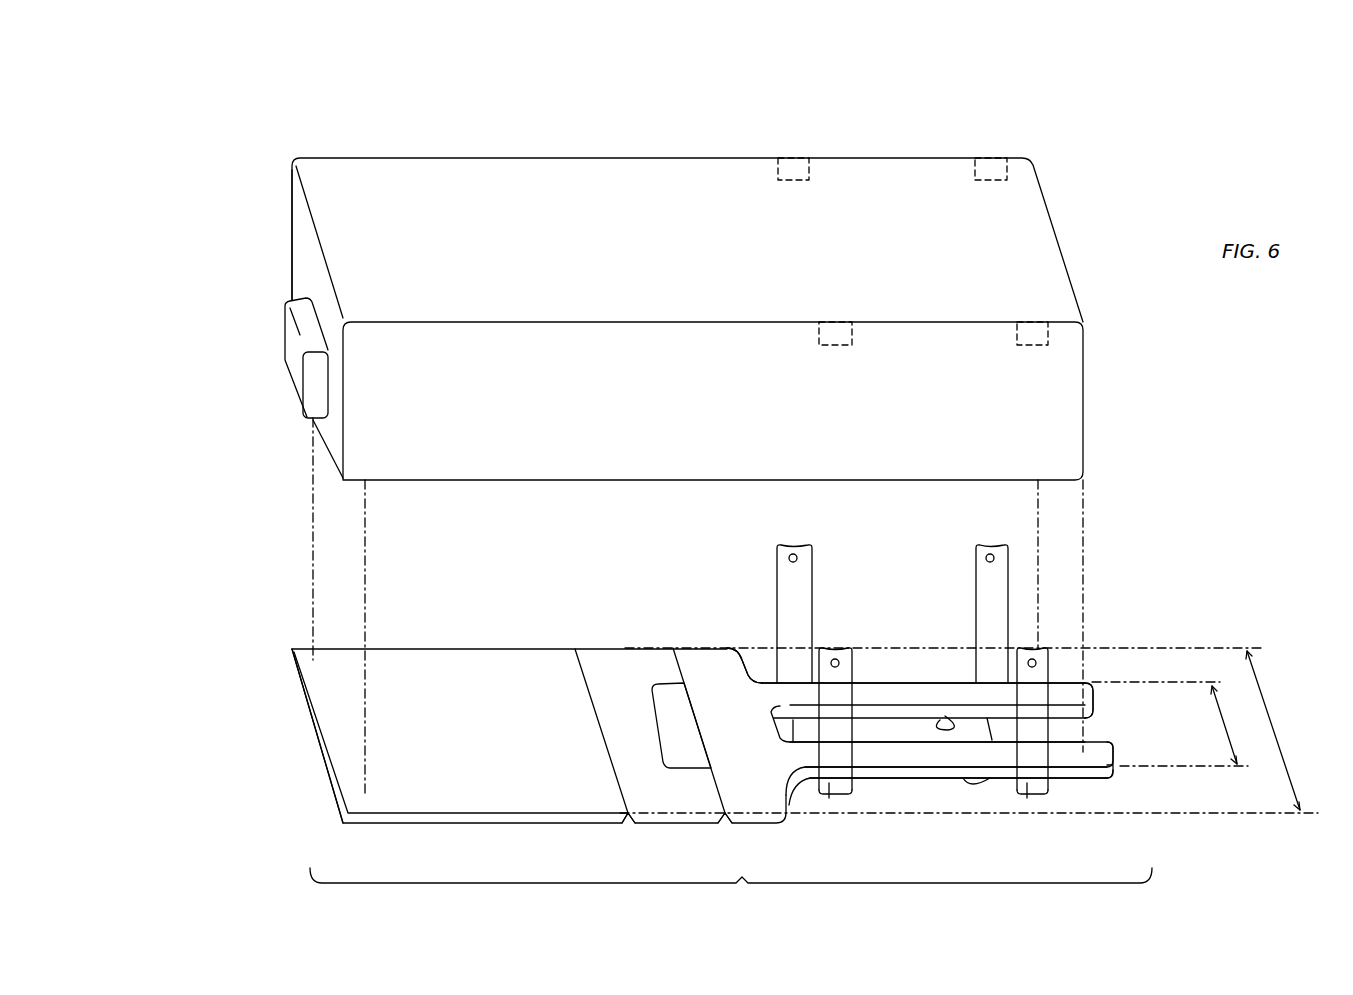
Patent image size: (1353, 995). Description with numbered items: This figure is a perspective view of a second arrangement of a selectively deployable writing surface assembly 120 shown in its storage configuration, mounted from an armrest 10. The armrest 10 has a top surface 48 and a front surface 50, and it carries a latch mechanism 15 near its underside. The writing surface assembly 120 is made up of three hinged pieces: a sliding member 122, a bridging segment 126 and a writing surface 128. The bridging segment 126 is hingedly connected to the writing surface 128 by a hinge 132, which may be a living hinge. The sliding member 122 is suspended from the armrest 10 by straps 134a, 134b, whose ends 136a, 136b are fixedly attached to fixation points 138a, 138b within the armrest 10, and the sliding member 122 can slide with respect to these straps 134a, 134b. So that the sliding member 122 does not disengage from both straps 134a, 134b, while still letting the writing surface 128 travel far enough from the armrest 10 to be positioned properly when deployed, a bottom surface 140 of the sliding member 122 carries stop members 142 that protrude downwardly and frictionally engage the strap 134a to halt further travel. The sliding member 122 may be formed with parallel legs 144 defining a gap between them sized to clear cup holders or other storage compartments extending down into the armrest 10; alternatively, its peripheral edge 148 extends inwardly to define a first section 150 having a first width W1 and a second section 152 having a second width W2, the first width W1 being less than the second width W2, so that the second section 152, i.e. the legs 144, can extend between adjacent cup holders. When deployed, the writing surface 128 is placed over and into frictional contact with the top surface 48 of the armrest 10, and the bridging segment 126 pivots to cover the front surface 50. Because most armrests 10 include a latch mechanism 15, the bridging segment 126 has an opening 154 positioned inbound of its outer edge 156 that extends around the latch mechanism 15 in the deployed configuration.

The armrest 10 is at (513, 132).
The latch mechanism 15 is at (285, 340).
The top surface 48 is at (452, 322).
The front surface 50 is at (290, 252).
The writing surface assembly 120 is at (731, 894).
The sliding member 122 is at (897, 790).
The bridging segment 126 is at (688, 832).
The writing surface 128 is at (398, 836).
The hinge 132 is at (622, 820).
The strap 134a is at (828, 785).
The strap 134b is at (1033, 785).
The end 136a is at (797, 554).
The end 136b is at (987, 554).
The fixation point 138a is at (793, 168).
The fixation point 138b is at (1000, 168).
The bottom surface 140 is at (910, 720).
The stop members 142 is at (940, 720).
The parallel legs 144 is at (1093, 690).
The peripheral edge 148 is at (756, 670).
The first section 150 is at (721, 636).
The second section 152 is at (898, 678).
The opening 154 is at (663, 690).
The outer edge 156 is at (592, 648).
The first width W1 is at (1273, 730).
The second width W2 is at (1221, 725).